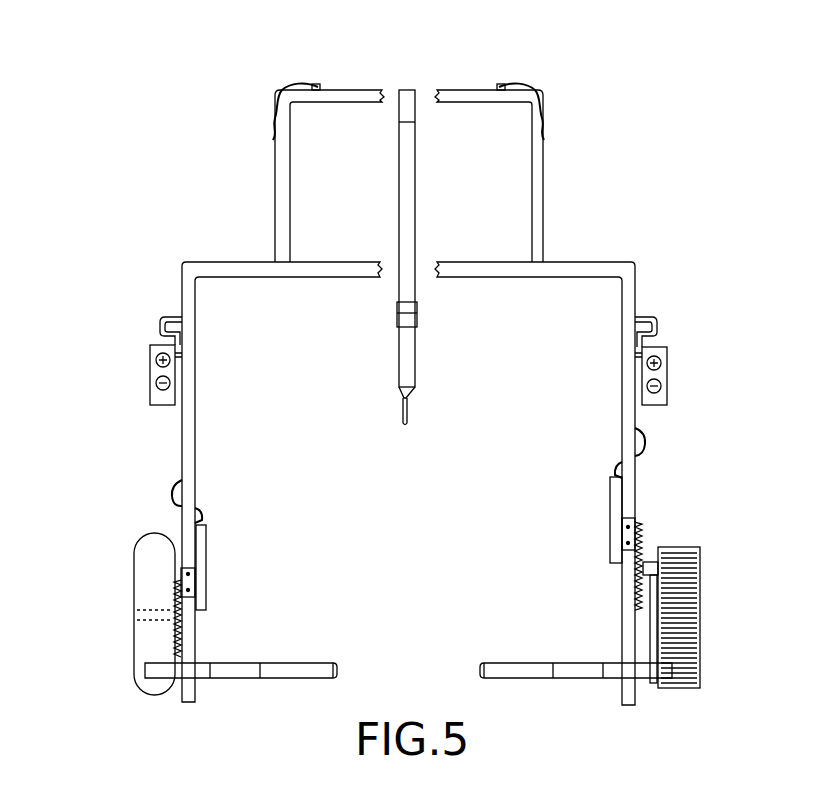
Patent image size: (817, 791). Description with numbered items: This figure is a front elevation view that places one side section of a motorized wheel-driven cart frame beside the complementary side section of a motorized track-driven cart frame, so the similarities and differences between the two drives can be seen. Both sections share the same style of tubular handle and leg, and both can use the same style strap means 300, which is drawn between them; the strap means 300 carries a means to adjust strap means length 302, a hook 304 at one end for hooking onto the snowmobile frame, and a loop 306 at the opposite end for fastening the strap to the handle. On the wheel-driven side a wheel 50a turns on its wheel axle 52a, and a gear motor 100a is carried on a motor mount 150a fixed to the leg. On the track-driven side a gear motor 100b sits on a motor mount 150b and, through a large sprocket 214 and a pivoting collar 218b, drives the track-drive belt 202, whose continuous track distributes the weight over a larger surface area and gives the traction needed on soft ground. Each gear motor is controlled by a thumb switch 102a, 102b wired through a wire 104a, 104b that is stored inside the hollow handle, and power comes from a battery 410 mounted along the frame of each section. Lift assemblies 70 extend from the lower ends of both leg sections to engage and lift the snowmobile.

The wheel 50a is at (134, 570).
The wheel axle 52a is at (157, 620).
The lift assemblies 70 is at (323, 648).
The gear motor 100a is at (207, 565).
The gear motor 100b is at (610, 510).
The thumb switch 102a is at (318, 84).
The thumb switch 102b is at (503, 84).
The wire 104a is at (275, 91).
The wire 104b is at (545, 93).
The motor mount 150a is at (188, 597).
The motor mount 150b is at (628, 505).
The track-drive belt 202 is at (700, 618).
The large sprocket 214 is at (644, 548).
The pivoting collar 218b is at (655, 562).
The strap means 300 is at (437, 184).
The means to adjust strap means length 302 is at (417, 312).
The hook 304 is at (408, 410).
The loop 306 is at (410, 91).
The battery 410 is at (150, 370).